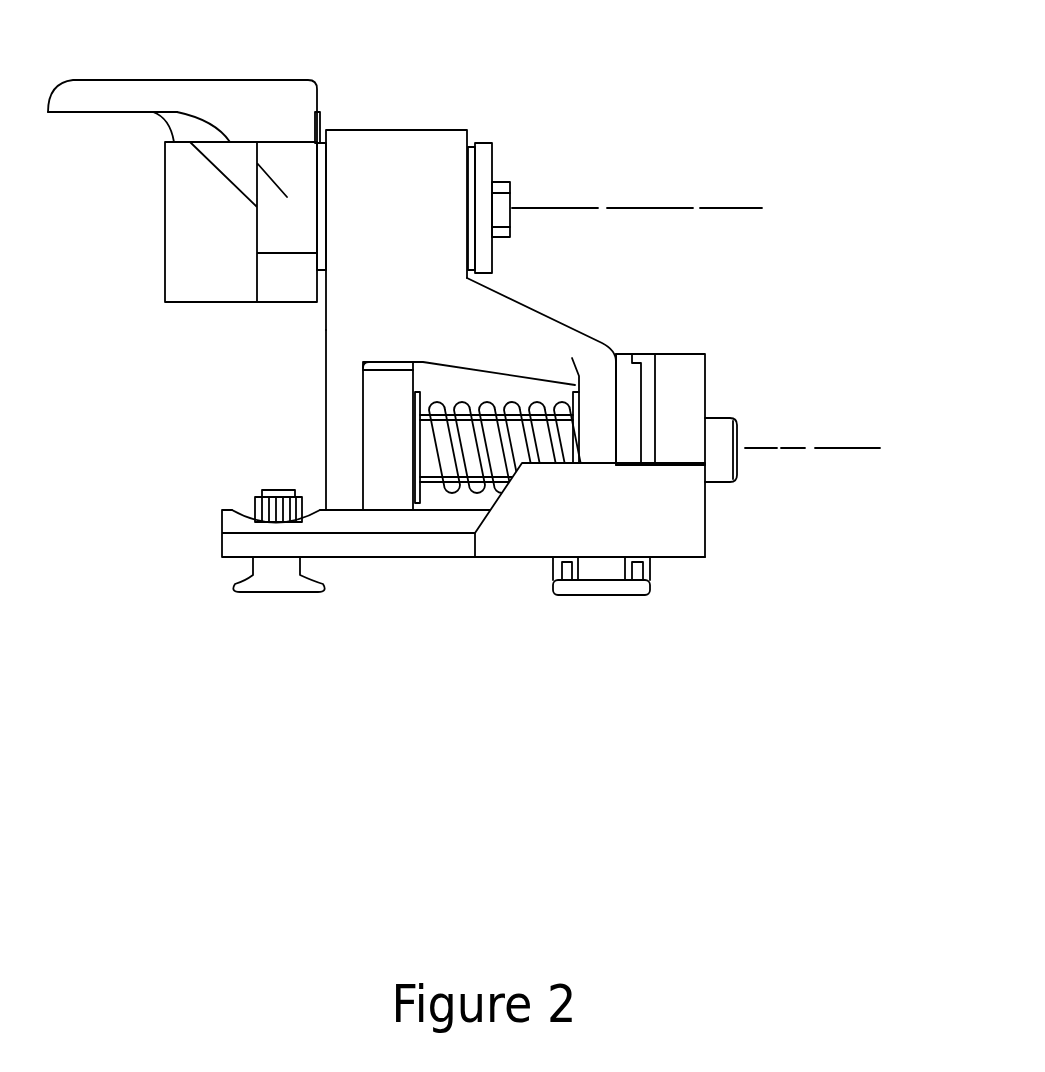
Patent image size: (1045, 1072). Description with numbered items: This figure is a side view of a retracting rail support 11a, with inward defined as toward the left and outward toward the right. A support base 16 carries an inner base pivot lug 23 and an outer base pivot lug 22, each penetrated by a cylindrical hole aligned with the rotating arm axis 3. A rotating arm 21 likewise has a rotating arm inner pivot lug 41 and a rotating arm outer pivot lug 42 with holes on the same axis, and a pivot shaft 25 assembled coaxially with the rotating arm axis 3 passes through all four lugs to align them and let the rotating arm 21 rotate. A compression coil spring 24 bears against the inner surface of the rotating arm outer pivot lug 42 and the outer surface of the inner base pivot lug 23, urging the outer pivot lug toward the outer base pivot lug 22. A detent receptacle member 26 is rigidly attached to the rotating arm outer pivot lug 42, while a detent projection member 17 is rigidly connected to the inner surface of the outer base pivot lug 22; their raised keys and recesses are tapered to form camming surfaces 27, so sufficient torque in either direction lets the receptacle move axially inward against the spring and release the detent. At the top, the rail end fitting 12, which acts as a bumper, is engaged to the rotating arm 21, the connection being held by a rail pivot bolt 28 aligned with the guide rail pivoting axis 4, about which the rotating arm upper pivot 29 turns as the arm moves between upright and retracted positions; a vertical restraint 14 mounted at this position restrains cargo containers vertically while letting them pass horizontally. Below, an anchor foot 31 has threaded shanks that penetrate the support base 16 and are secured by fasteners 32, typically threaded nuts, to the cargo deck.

The vertical restraint 14 is at (183, 95).
The rail end fitting 12 is at (198, 243).
The rotating arm upper pivot 29 is at (383, 150).
The rotating arm inner pivot lug 41 is at (337, 428).
The rail pivot bolt 28 is at (512, 187).
The guide rail pivoting axis 4 is at (700, 208).
The rotating arm 21 is at (503, 330).
The inner base pivot lug 23 is at (392, 490).
The compression coil spring 24 is at (445, 485).
The support base 16 is at (653, 507).
The retracting rail support 11a is at (707, 523).
The fastener 32 is at (257, 495).
The anchor foot 31 is at (252, 583).
The rotating arm outer pivot lug 42 is at (600, 435).
The outer base pivot lug 22 is at (693, 353).
The detent receptacle member 26 is at (623, 387).
The camming surfaces 27 is at (635, 362).
The detent projection member 17 is at (647, 392).
The pivot shaft 25 is at (722, 418).
The rotating arm axis 3 is at (815, 448).